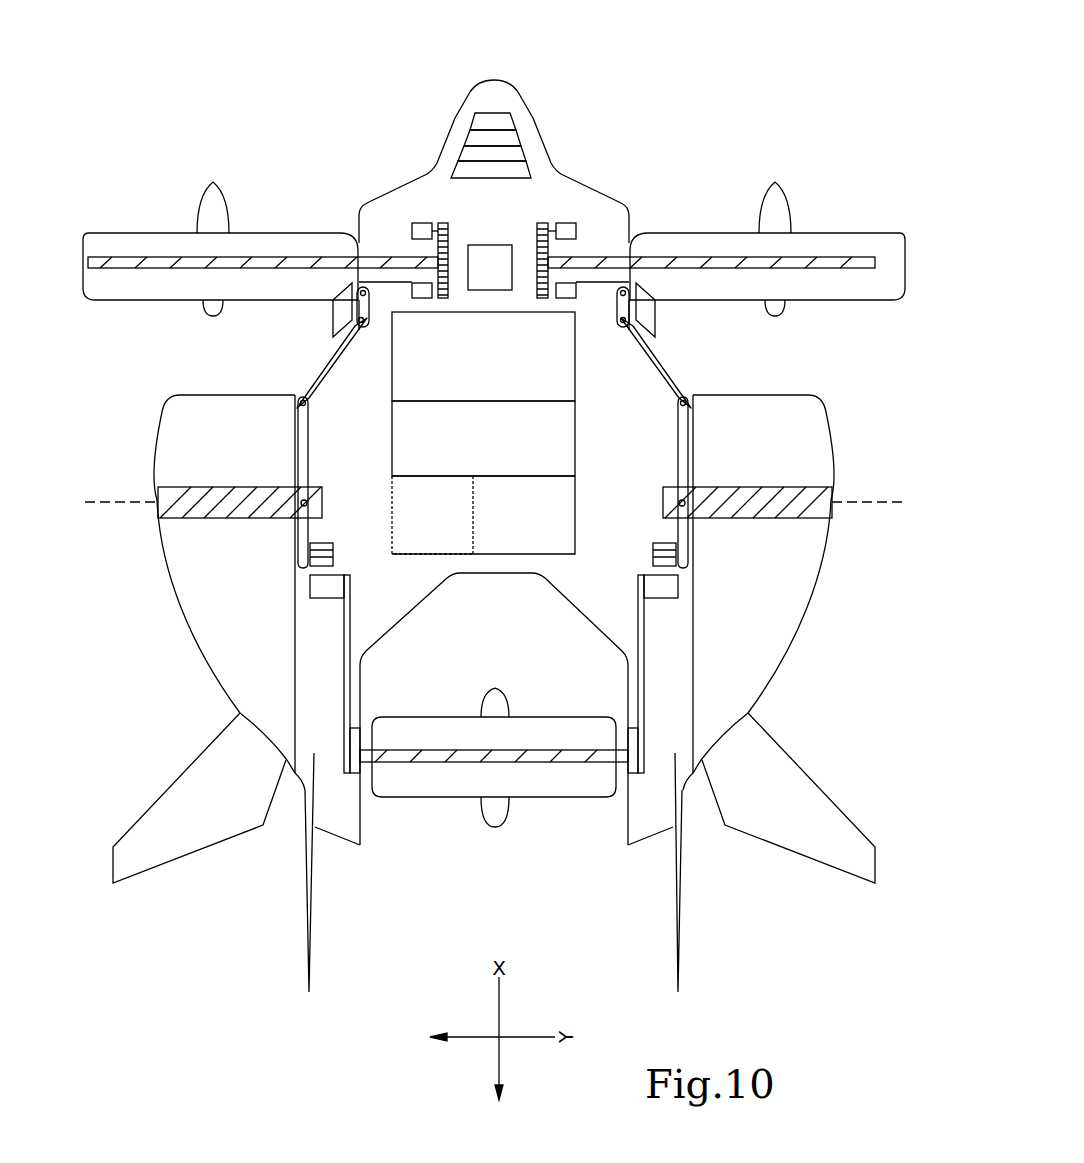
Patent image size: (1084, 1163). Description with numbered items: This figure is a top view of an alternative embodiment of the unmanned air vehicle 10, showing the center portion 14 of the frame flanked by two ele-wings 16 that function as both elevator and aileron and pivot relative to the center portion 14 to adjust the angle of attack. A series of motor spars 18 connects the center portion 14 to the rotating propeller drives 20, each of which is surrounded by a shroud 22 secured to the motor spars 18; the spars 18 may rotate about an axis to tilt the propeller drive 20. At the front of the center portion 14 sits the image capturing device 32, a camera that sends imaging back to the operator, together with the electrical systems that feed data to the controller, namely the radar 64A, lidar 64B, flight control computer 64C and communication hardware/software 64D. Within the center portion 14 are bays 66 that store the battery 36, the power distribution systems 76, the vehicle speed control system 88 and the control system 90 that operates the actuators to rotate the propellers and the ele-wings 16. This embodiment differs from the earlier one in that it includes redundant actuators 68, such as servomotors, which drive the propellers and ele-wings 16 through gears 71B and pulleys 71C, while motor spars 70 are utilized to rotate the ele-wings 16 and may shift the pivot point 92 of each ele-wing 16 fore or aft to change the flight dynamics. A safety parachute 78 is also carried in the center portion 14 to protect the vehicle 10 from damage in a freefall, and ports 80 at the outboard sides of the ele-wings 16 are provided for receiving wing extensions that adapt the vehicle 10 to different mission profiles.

The unmanned air vehicle 10 is at (263, 68).
The center portion 14 is at (325, 755).
The ele-wings 16 is at (240, 740).
The motor spars 18 is at (110, 262).
The rotating propeller drives 20 is at (222, 198).
The shroud 22 is at (138, 240).
The image capturing device 32 is at (475, 92).
The battery 36 is at (483, 356).
The radar 64A is at (508, 118).
The lidar 64B is at (515, 134).
The flight control computer 64C is at (520, 151).
The communication hardware/software 64D is at (525, 168).
The bays 66 is at (554, 377).
The redundant actuators 68 is at (536, 231).
The motor spars 70 is at (352, 350).
The gears 71B is at (412, 224).
The pulleys 71C is at (357, 322).
The power distribution systems 76 is at (483, 438).
The safety parachute 78 is at (490, 267).
The ports 80 is at (150, 505).
The vehicle speed control system 88 is at (524, 515).
The control system 90 is at (432, 515).
The pivot point 92 is at (108, 498).